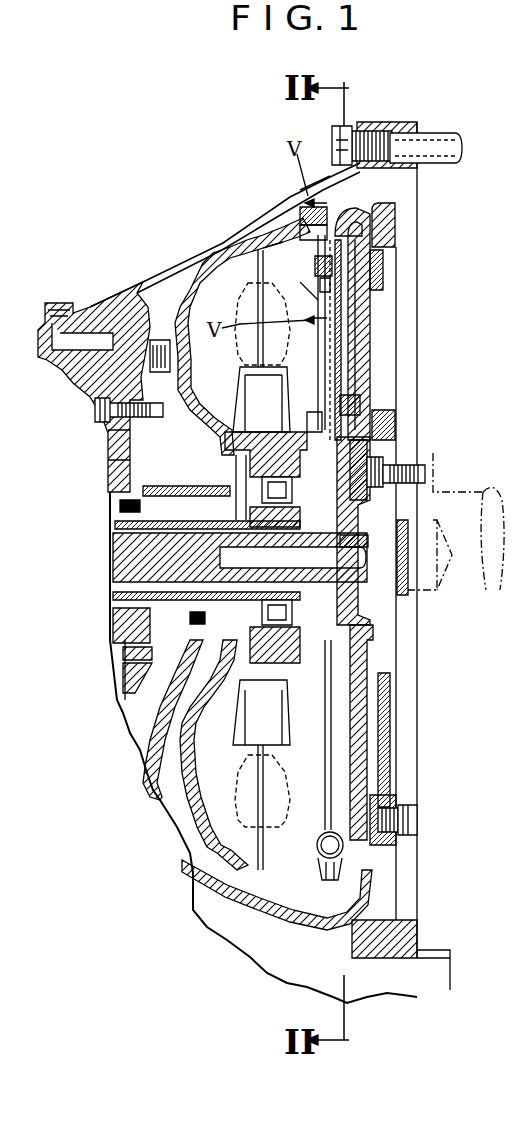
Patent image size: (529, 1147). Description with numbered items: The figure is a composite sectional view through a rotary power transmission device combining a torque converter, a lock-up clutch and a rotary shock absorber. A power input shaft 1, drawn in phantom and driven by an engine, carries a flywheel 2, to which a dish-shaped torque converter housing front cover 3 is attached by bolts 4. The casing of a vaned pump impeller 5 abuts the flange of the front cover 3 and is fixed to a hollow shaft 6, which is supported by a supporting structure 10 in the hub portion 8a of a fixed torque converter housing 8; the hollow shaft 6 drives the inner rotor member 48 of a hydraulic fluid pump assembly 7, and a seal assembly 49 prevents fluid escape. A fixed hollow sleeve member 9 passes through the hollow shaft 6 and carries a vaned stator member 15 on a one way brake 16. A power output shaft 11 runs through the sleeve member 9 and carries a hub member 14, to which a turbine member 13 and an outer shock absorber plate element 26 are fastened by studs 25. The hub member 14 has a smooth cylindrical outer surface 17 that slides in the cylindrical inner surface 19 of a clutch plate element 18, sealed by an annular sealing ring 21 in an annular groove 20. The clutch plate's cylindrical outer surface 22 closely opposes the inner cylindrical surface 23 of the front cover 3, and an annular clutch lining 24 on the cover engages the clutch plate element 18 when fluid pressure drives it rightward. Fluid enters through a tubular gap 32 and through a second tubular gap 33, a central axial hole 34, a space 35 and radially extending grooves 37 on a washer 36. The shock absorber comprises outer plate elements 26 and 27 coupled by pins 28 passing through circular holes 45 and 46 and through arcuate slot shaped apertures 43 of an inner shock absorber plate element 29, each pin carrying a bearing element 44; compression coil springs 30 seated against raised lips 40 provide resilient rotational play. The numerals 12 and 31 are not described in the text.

The power input shaft 1 is at (482, 488).
The flywheel 2 is at (383, 270).
The torque converter housing front cover 3 is at (363, 240).
The bolts 4 is at (397, 807).
The pump impeller 5 is at (222, 255).
The hollow shaft 6 is at (123, 613).
The hydraulic fluid pump assembly 7 is at (135, 484).
The fixed torque converter housing 8 is at (143, 277).
The hub portion 8a is at (200, 482).
The fixed hollow sleeve member 9 is at (115, 528).
The supporting structure 10 is at (120, 508).
The power output shaft 11 is at (117, 558).
The liner 12 is at (283, 197).
The torque converter turbine member 13 is at (275, 242).
The hub member 14 is at (410, 514).
The torque converter stator member 15 is at (280, 380).
The one way brake 16 is at (283, 460).
The cylindrical outer surface 17 is at (322, 424).
The clutch plate element 18 is at (347, 331).
The cylindrical inner surface 19 is at (383, 424).
The annular groove 20 is at (328, 413).
The annular sealing ring 21 is at (350, 405).
The cylindrical outer surface 22 is at (333, 213).
The inner cylindrical surface 23 is at (302, 208).
The annular clutch lining 24 is at (362, 303).
The studs 25 is at (385, 678).
The outer shock absorber plate element 26 is at (332, 722).
The outer shock absorber plate element 27 is at (293, 893).
The pins 28 is at (352, 315).
The inner shock absorber plate element 29 is at (330, 882).
The compression coil springs 30 is at (315, 840).
The wall 31 is at (360, 750).
The tubular gap 32 is at (193, 650).
The tubular gap 33 is at (195, 620).
The central axial hole 34 is at (352, 563).
The space 35 is at (367, 548).
The washer 36 is at (397, 437).
The radially extending grooves 37 is at (345, 498).
The raised lip 40 is at (393, 877).
The arcuate slot shaped aperture 43 is at (263, 268).
The bearing element 44 is at (330, 312).
The circular hole 45 is at (320, 282).
The circular hole 46 is at (317, 267).
The inner rotor member 48 is at (127, 633).
The seal assembly 49 is at (182, 670).